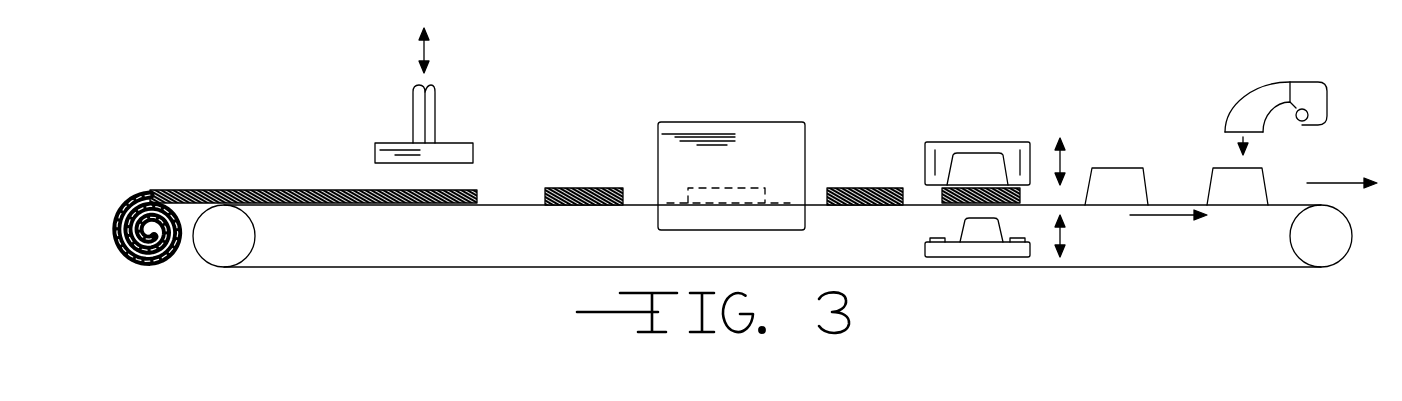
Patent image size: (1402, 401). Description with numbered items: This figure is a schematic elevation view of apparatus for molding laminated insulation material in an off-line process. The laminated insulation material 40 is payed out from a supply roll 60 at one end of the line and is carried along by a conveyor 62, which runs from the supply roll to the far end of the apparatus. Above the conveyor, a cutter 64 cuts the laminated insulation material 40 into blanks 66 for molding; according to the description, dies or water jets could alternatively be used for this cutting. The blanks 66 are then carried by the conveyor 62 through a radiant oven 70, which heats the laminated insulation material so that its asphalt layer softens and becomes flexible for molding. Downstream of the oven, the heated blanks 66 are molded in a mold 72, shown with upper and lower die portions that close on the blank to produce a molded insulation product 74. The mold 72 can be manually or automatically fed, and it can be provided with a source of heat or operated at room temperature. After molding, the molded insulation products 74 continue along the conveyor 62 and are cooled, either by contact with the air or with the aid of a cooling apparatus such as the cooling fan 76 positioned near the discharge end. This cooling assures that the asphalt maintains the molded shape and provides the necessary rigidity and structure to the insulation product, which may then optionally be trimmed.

The laminated insulation material 40 is at (203, 190).
The supply roll 60 is at (110, 233).
The conveyor 62 is at (390, 268).
The cutter 64 is at (390, 143).
The blanks 66 is at (567, 188).
The radiant oven 70 is at (720, 122).
The mold 72 is at (977, 142).
The molded insulation product 74 is at (1112, 168).
The cooling fan 76 is at (1307, 125).